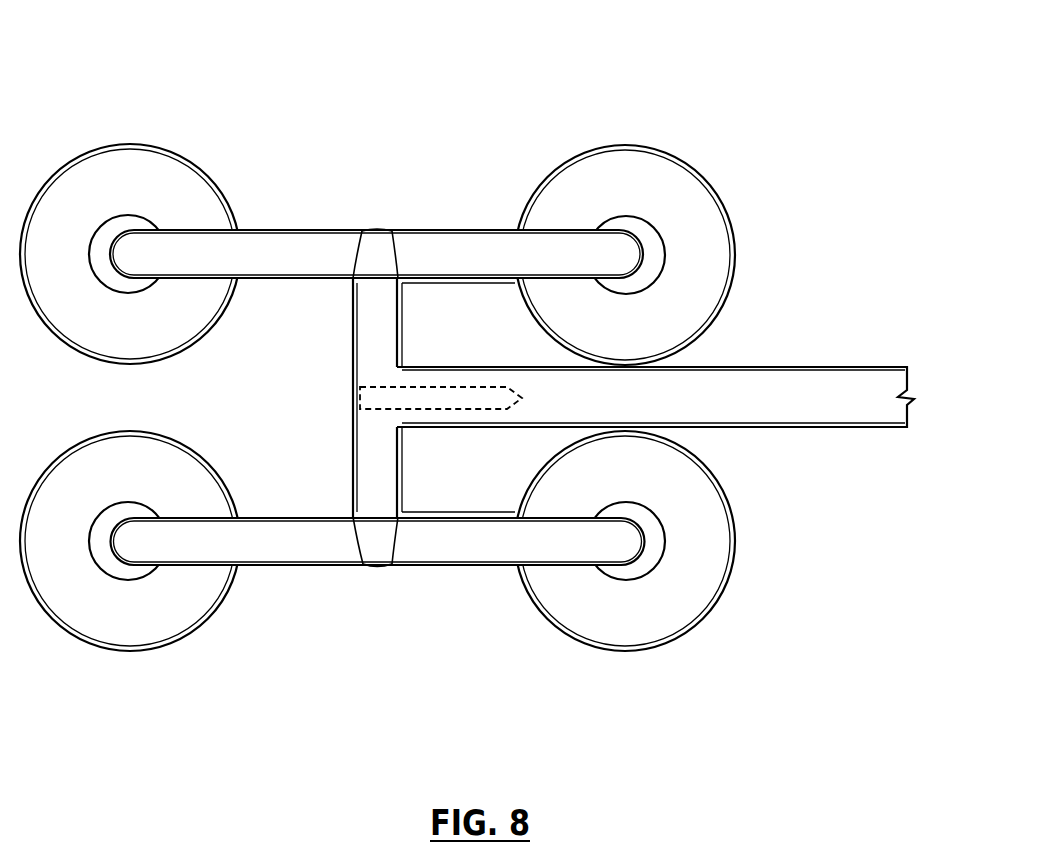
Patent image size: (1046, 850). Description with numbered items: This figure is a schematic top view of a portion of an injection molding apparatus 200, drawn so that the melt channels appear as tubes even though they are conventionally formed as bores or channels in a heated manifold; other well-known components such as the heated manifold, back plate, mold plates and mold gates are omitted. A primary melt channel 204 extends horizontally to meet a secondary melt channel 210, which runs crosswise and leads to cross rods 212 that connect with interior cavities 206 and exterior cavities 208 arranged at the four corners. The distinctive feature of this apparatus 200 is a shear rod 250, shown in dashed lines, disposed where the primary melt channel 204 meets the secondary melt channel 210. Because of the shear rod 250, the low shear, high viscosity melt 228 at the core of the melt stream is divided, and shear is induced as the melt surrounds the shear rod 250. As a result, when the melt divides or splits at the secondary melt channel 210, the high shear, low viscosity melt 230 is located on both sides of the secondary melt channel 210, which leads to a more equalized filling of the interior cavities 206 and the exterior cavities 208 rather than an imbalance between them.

The injection molding apparatus 200 is at (467, 376).
The primary melt channel 204 is at (805, 383).
The interior cavities 206 is at (628, 167).
The exterior cavities 208 is at (100, 175).
The secondary melt channel 210 is at (365, 325).
The cross rod 212 is at (285, 245).
The low shear, high viscosity melt 228 is at (542, 410).
The high shear, low viscosity melt 230 is at (432, 372).
The shear rod 250 is at (360, 400).